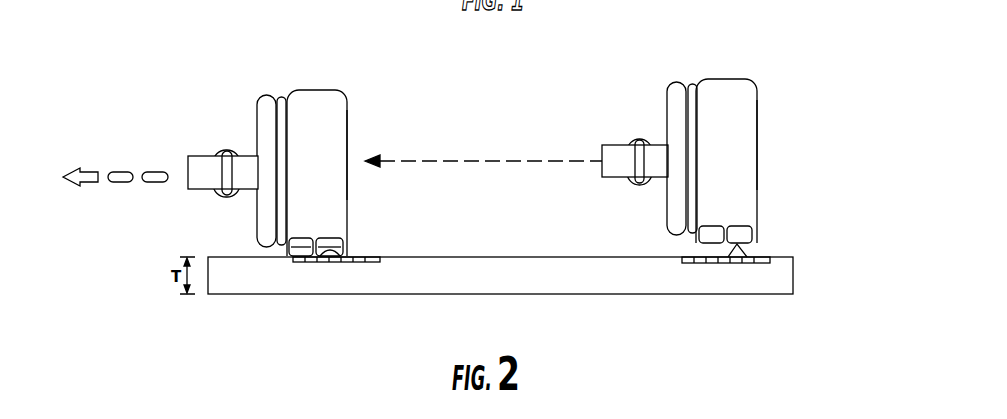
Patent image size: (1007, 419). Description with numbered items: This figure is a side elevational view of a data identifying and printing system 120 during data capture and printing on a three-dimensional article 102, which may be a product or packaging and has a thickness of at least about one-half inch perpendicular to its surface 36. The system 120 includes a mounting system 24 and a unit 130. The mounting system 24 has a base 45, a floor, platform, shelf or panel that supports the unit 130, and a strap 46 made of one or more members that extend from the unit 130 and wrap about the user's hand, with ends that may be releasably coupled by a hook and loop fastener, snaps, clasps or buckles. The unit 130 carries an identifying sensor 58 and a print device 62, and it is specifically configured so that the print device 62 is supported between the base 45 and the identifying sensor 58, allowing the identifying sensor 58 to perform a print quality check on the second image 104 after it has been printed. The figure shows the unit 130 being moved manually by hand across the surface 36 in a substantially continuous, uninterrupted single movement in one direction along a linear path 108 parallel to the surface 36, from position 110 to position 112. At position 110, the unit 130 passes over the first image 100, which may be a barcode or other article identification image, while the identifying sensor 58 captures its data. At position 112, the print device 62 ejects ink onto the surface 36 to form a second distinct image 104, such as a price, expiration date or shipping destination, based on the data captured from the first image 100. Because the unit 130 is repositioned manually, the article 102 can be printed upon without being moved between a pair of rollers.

The mounting system 24 is at (260, 93).
The surface 36 is at (780, 258).
The base 45 is at (270, 95).
The strap 46 is at (203, 156).
The identifying sensor 58 is at (345, 245).
The print device 62 is at (290, 245).
The first image 100 is at (730, 256).
The article 102 is at (795, 287).
The second image 104 is at (355, 263).
The linear path 108 is at (435, 160).
The position 110 is at (750, 177).
The position 112 is at (438, 172).
The data identifying and printing system 120 is at (349, 93).
The unit 130 is at (349, 128).